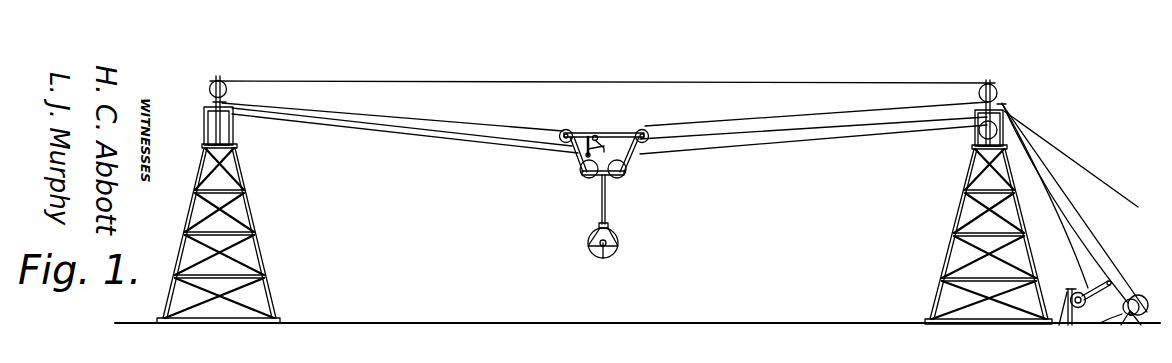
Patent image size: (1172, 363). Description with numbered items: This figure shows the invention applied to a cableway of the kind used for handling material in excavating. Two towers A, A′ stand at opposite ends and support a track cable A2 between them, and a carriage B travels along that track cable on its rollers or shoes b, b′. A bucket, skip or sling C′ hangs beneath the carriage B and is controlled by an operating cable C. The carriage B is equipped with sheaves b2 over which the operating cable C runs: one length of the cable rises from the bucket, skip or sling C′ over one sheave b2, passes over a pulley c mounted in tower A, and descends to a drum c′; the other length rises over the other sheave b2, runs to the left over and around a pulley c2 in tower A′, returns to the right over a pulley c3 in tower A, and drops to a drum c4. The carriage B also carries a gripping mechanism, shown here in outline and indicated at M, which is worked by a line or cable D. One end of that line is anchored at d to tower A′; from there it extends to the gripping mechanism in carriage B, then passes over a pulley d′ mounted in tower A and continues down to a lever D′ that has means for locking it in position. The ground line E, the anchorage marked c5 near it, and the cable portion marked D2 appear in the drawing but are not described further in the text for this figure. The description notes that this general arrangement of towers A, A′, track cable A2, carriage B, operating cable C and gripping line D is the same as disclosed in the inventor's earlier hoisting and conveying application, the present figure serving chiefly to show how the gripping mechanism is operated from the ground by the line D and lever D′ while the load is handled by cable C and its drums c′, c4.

The tower A is at (962, 198).
The tower A′ is at (258, 215).
The track cable A2 is at (325, 126).
The carriage B is at (574, 150).
The roller or shoe b is at (648, 132).
The roller or shoe b′ is at (567, 129).
The sheaves b2 is at (582, 180).
The operating cable C is at (508, 84).
The bucket, skip or sling C′ is at (616, 233).
The pulley c is at (977, 135).
The drum c′ is at (1097, 323).
The pulley c2 is at (209, 85).
The pulley c3 is at (982, 88).
The drum c4 is at (1140, 295).
The anchor c5 is at (415, 343).
The line or cable D is at (468, 124).
The lever D′ is at (1076, 290).
The rope D2 is at (583, 163).
The anchorage d is at (236, 104).
The pulley d′ is at (1003, 103).
The ground E is at (637, 343).
The gripping mechanism M is at (600, 140).